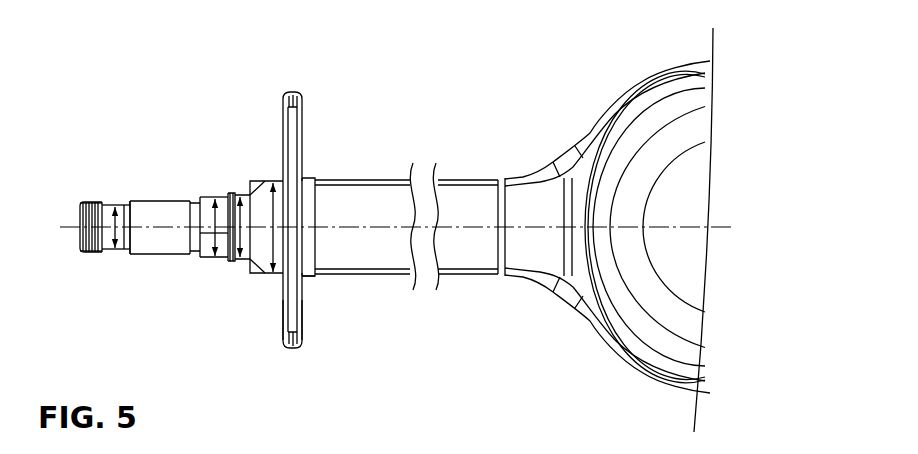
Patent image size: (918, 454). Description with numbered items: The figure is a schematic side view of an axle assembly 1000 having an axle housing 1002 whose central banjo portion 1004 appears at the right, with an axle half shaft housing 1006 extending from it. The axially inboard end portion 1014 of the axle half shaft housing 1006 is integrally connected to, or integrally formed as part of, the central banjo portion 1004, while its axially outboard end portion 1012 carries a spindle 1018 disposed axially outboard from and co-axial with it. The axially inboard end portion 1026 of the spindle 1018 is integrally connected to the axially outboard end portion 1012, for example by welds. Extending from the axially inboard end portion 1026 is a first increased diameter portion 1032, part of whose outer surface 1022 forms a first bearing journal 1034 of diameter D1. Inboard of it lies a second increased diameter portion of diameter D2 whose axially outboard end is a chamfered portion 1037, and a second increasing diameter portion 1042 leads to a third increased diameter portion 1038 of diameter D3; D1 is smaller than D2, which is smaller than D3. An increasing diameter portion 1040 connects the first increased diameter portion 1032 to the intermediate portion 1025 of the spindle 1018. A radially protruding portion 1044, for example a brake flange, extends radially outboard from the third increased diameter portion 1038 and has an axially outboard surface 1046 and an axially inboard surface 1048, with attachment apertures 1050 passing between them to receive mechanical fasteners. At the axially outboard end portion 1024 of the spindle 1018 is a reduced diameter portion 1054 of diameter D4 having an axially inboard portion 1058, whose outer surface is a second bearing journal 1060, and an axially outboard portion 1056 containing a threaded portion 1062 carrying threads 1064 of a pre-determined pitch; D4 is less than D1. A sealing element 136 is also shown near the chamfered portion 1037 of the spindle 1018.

The axle assembly 1000 is at (532, 85).
The axle housing 1002 is at (687, 62).
The central banjo portion 1004 is at (627, 353).
The axle half shaft housing 1006 is at (463, 180).
The axially outboard end portion 1012 is at (392, 275).
The axially inboard end portion 1014 is at (470, 274).
The spindle 1018 is at (152, 257).
The outer surface 1022 is at (147, 201).
The axially outboard end portion 1024 is at (95, 203).
The intermediate portion 1025 is at (176, 200).
The axially inboard end portion 1026 is at (313, 178).
The first increased diameter portion 1032 is at (212, 259).
The first bearing journal 1034 is at (213, 198).
The chamfered portion 1037 is at (229, 194).
The third increased diameter portion 1038 is at (309, 278).
The increasing diameter portion 1040 is at (198, 254).
The second increasing diameter portion 1042 is at (239, 262).
The radially protruding portion 1044 is at (302, 112).
The axially outboard surface 1046 is at (283, 320).
The axially inboard surface 1048 is at (302, 317).
The attachment aperture 1050 is at (292, 349).
The reduced diameter portion 1054 is at (110, 252).
The axially outboard portion 1056 is at (90, 202).
The axially inboard portion 1058 is at (112, 204).
The second bearing journal 1060 is at (125, 252).
The threaded portion 1062 is at (97, 252).
The threads 1064 is at (95, 212).
The seal ring 136 is at (231, 263).
The diameter of first increased diameter portion D1 is at (214, 212).
The diameter of second increased diameter portion D2 is at (214, 234).
The diameter of third increased diameter portion D3 is at (261, 212).
The diameter of reduced diameter portion D4 is at (113, 235).